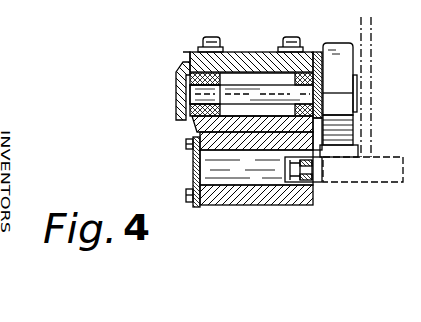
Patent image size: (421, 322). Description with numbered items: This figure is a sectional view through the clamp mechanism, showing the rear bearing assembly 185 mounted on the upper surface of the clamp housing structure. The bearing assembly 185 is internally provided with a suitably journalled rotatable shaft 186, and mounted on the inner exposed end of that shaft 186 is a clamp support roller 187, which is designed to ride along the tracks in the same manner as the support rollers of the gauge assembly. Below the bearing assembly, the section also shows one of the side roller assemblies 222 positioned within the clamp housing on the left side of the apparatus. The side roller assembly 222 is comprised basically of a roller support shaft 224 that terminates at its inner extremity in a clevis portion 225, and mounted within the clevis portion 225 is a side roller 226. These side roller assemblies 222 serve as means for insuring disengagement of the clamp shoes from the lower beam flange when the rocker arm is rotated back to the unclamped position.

The rear bearing assembly 185 is at (234, 49).
The rotatable shaft 186 is at (262, 88).
The clamp support roller 187 is at (346, 66).
The side roller assembly 222 is at (188, 163).
The roller support shaft 224 is at (229, 180).
The clevis portion 225 is at (292, 185).
The side roller 226 is at (322, 181).